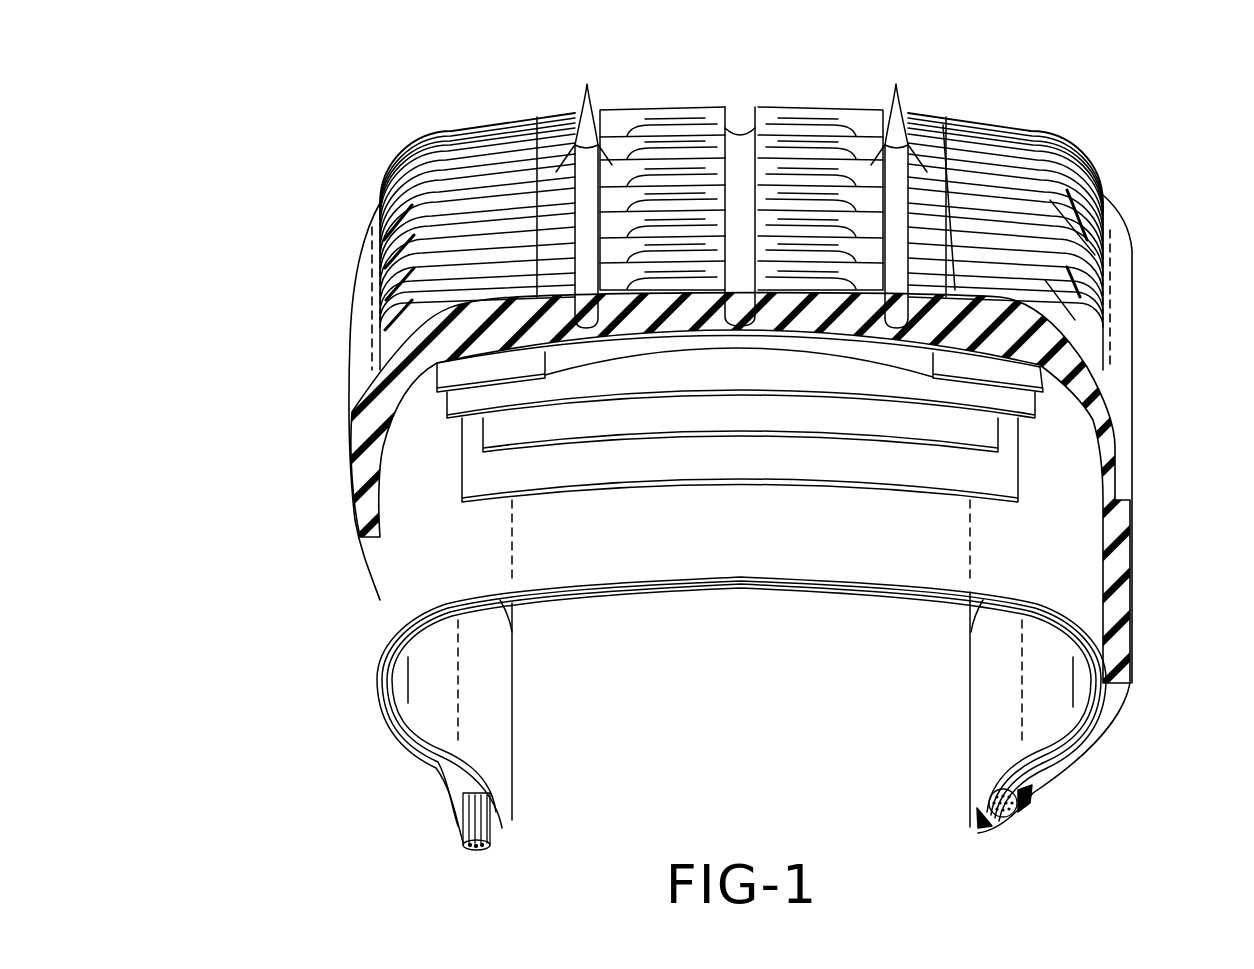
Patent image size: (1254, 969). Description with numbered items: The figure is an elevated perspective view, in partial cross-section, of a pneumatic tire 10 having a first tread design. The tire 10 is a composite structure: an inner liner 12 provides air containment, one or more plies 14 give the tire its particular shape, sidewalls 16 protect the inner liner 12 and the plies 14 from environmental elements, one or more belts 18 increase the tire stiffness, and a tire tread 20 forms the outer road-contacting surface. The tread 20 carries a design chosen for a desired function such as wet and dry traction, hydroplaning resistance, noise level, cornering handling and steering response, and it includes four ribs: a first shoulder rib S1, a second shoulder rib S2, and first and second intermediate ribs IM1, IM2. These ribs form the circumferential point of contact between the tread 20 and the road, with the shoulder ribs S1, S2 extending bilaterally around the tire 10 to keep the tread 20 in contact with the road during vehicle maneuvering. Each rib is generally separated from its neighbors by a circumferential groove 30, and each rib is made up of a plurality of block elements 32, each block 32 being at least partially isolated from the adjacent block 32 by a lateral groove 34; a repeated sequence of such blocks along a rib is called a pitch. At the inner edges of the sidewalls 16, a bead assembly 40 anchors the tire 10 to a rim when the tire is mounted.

The pneumatic tire 10 is at (278, 142).
The inner liner 12 is at (470, 703).
The plies 14 is at (1070, 581).
The sidewalls 16 is at (362, 352).
The belts 18 is at (767, 450).
The tire tread 20 is at (551, 106).
The circumferential groove 30 is at (592, 313).
The block elements 32 is at (1043, 187).
The lateral groove 34 is at (1133, 198).
The bead assembly 40 is at (473, 850).
The first shoulder rib S1 is at (470, 126).
The second shoulder rib S2 is at (1047, 143).
The first intermediate rib IM1 is at (633, 107).
The second intermediate rib IM2 is at (840, 108).